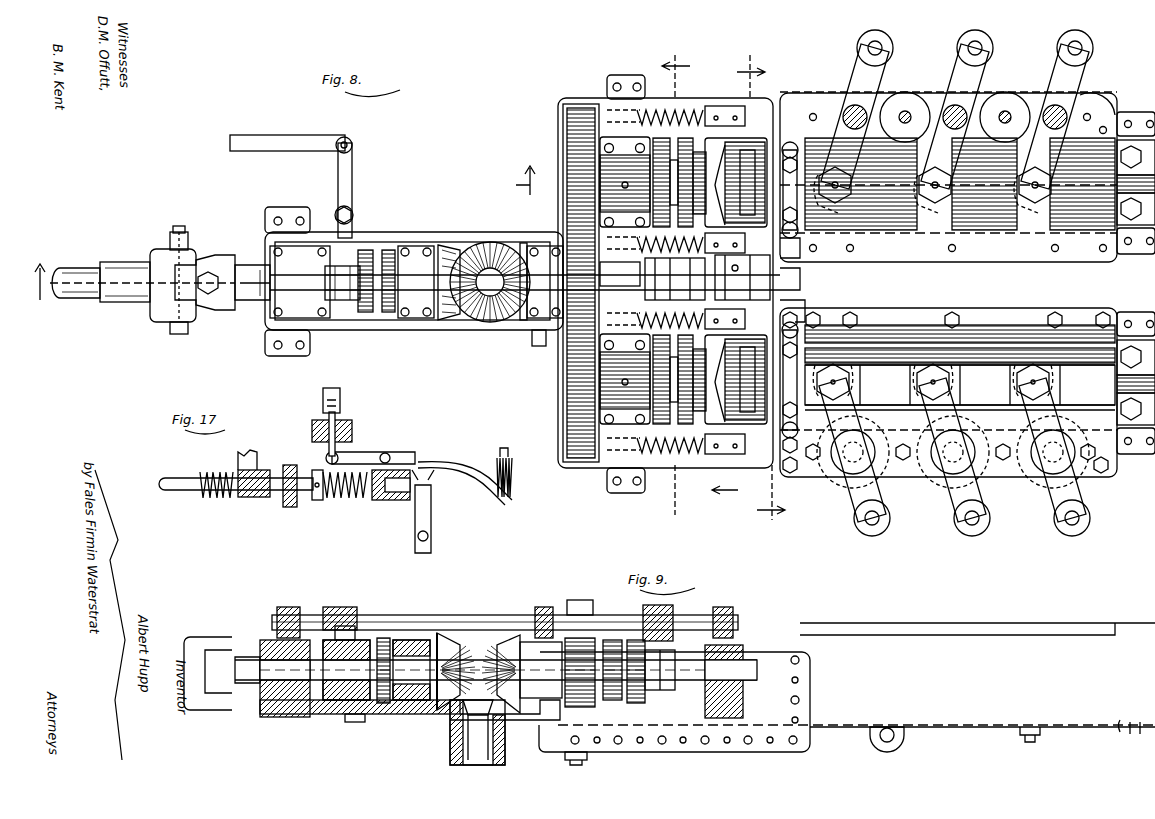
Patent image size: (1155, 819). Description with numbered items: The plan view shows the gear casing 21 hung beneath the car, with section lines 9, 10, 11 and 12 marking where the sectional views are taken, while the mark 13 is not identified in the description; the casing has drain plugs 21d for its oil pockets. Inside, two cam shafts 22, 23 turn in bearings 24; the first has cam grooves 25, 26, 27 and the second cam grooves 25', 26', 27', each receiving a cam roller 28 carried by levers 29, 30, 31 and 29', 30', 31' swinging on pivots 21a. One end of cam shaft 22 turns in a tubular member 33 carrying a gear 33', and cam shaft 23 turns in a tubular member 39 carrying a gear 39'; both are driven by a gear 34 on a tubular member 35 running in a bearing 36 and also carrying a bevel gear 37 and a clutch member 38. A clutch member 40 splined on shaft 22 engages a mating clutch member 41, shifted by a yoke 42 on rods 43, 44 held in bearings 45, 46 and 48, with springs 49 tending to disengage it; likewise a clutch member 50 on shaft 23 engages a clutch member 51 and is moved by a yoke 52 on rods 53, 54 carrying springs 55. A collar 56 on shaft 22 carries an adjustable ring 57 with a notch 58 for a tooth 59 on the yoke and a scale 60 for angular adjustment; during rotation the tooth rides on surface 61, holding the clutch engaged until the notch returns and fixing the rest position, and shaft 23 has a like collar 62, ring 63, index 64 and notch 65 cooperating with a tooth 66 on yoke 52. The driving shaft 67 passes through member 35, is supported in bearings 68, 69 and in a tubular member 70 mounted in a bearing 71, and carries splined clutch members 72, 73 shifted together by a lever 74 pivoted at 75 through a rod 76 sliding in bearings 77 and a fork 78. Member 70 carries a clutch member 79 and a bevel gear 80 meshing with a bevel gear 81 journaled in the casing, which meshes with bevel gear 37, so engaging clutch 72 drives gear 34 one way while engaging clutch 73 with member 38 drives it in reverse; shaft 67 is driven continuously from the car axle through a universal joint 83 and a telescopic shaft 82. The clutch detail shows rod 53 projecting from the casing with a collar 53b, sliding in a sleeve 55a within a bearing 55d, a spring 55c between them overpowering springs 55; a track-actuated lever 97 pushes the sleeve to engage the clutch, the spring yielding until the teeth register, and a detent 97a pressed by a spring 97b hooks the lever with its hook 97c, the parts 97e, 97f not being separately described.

In FIG. 8, the section line 9 is at (34, 282).
In FIG. 8, the section line 10 is at (516, 180).
In FIG. 8, the section line 11 is at (761, 287).
In FIG. 8, the section line 12 is at (700, 284).
In FIG. 8, the shaft coupling 13 is at (652, 279).
In FIG. 8, the gear casing 21 is at (578, 466).
In FIG. 17, the gear casing 21 is at (288, 464).
In FIG. 9, the gear casing 21 is at (455, 745).
In FIG. 8, the pivots 21a is at (965, 112).
In FIG. 9, the pivots 21a is at (352, 724).
In FIG. 9, the drain plugs 21d is at (576, 766).
In FIG. 8, the cam shaft 22 is at (1083, 173).
In FIG. 8, the cam shaft 23 is at (948, 392).
In FIG. 8, the bearings 24 is at (552, 215).
In FIG. 8, the cam groove 25 is at (948, 177).
In FIG. 8, the cam groove 26 is at (972, 241).
In FIG. 8, the cam groove 27 is at (851, 302).
In FIG. 8, the cam groove 25' is at (885, 334).
In FIG. 8, the cam groove 26' is at (984, 334).
In FIG. 8, the cam groove 27' is at (1076, 373).
In FIG. 8, the cam roller 28 is at (853, 185).
In FIG. 8, the lever 29 is at (871, 121).
In FIG. 8, the lever 30 is at (971, 121).
In FIG. 8, the lever 31 is at (1074, 121).
In FIG. 8, the lever 29' is at (851, 452).
In FIG. 8, the lever 30' is at (951, 452).
In FIG. 8, the lever 31' is at (1051, 454).
In FIG. 8, the tubular member 33 is at (560, 283).
In FIG. 8, the gear 33' is at (542, 122).
In FIG. 8, the gear 34 is at (562, 320).
In FIG. 9, the gear 34 is at (585, 706).
In FIG. 9, the tubular member 35 is at (496, 670).
In FIG. 8, the bearing 36 is at (540, 335).
In FIG. 8, the bevel gear 37 is at (523, 321).
In FIG. 9, the bevel gear 37 is at (506, 640).
In FIG. 8, the clutch member 38 is at (562, 350).
In FIG. 9, the clutch member 38 is at (612, 640).
In FIG. 8, the tubular member 39 is at (542, 360).
In FIG. 8, the gear 39' is at (545, 411).
In FIG. 8, the clutch member 40 is at (690, 148).
In FIG. 8, the clutch member 41 is at (625, 182).
In FIG. 8, the yoke 42 is at (700, 195).
In FIG. 8, the rod 43 is at (686, 120).
In FIG. 8, the rod 44 is at (795, 258).
In FIG. 8, the bearing 45 is at (622, 114).
In FIG. 8, the bearing 46 is at (776, 100).
In FIG. 8, the bearing 48 is at (784, 246).
In FIG. 8, the springs 49 is at (668, 110).
In FIG. 8, the clutch member 50 is at (700, 435).
In FIG. 8, the clutch member 51 is at (618, 390).
In FIG. 8, the yoke 52 is at (907, 102).
In FIG. 17, the yoke 52 is at (240, 462).
In FIG. 8, the rod 53 is at (692, 438).
In FIG. 17, the rod 53 is at (180, 491).
In FIG. 17, the collar 53b is at (316, 500).
In FIG. 8, the rod 54 is at (793, 308).
In FIG. 8, the springs 55 is at (662, 456).
In FIG. 17, the springs 55 is at (222, 492).
In FIG. 17, the sleeve 55a is at (396, 500).
In FIG. 17, the spring 55c is at (340, 499).
In FIG. 17, the bearing 55d is at (376, 500).
In FIG. 8, the collar 56 is at (788, 205).
In FIG. 8, the ring 57 is at (736, 182).
In FIG. 8, the notch 58 is at (736, 209).
In FIG. 8, the tooth 59 is at (716, 165).
In FIG. 8, the scale 60 is at (735, 165).
In FIG. 8, the surface 61 is at (716, 209).
In FIG. 8, the collar 62 is at (790, 345).
In FIG. 8, the ring 63 is at (736, 379).
In FIG. 8, the index 64 is at (735, 367).
In FIG. 8, the notch 65 is at (735, 401).
In FIG. 8, the tooth 66 is at (726, 362).
In FIG. 8, the shaft 67 is at (490, 322).
In FIG. 9, the shaft 67 is at (306, 682).
In FIG. 9, the bearing 68 is at (738, 700).
In FIG. 9, the bearing 69 is at (248, 706).
In FIG. 9, the tubular member 70 is at (411, 670).
In FIG. 9, the bearing 71 is at (397, 715).
In FIG. 8, the clutch member 72 is at (366, 312).
In FIG. 9, the clutch member 72 is at (356, 700).
In FIG. 8, the clutch member 73 is at (625, 379).
In FIG. 9, the clutch member 73 is at (645, 698).
In FIG. 8, the lever 74 is at (336, 183).
In FIG. 8, the pivot 75 is at (354, 216).
In FIG. 8, the rod 76 is at (488, 245).
In FIG. 9, the rod 76 is at (389, 635).
In FIG. 9, the bearings 77 is at (290, 607).
In FIG. 9, the fork 78 is at (665, 606).
In FIG. 8, the clutch member 79 is at (388, 312).
In FIG. 9, the clutch member 79 is at (384, 640).
In FIG. 8, the bevel gear 80 is at (447, 247).
In FIG. 9, the bevel gear 80 is at (448, 632).
In FIG. 8, the bevel gear 81 is at (472, 242).
In FIG. 9, the bevel gear 81 is at (500, 745).
In FIG. 8, the telescopic shaft 82 is at (85, 299).
In FIG. 8, the universal joint 83 is at (175, 312).
In FIG. 17, the lever 97 is at (433, 515).
In FIG. 17, the latching lever 97a is at (440, 465).
In FIG. 17, the spring 97b is at (497, 470).
In FIG. 17, the hook 97c is at (405, 460).
In FIG. 17, the guide block 97e is at (353, 432).
In FIG. 17, the cap 97f is at (341, 400).